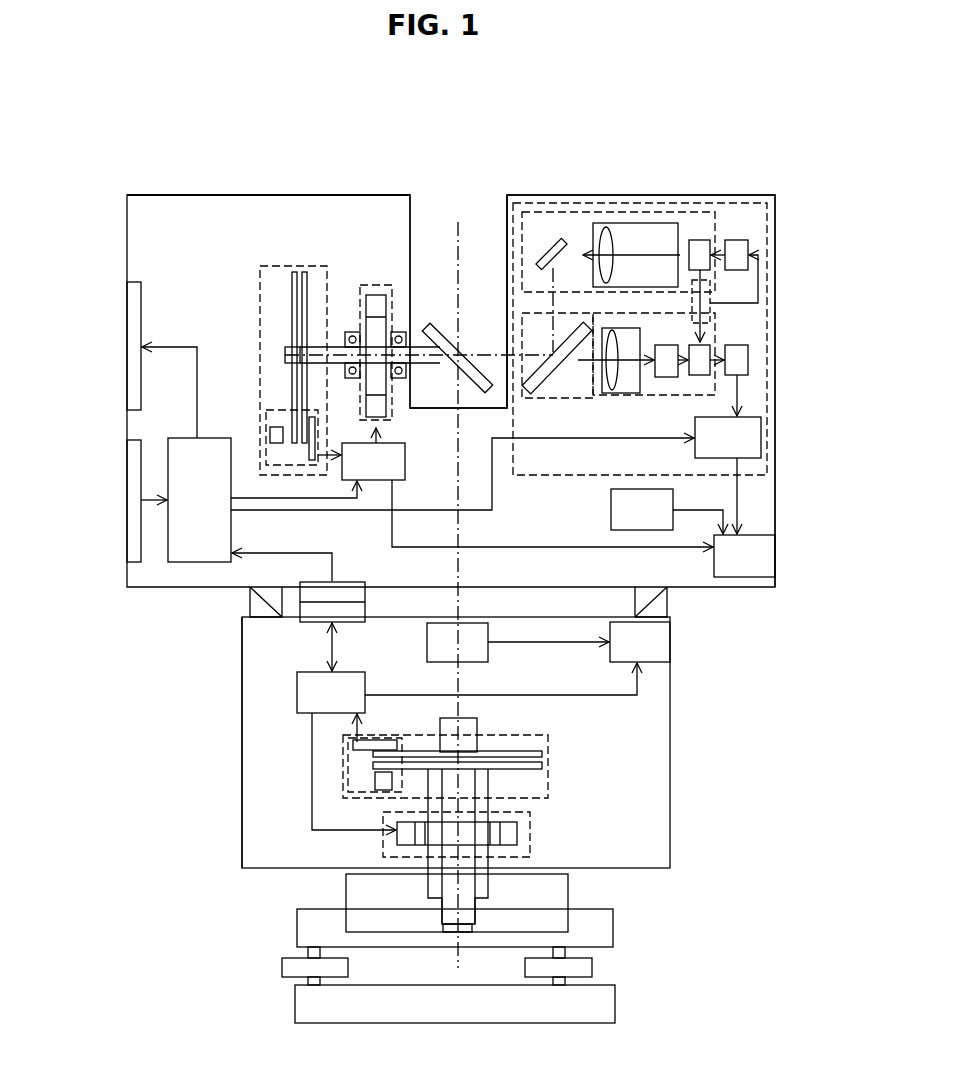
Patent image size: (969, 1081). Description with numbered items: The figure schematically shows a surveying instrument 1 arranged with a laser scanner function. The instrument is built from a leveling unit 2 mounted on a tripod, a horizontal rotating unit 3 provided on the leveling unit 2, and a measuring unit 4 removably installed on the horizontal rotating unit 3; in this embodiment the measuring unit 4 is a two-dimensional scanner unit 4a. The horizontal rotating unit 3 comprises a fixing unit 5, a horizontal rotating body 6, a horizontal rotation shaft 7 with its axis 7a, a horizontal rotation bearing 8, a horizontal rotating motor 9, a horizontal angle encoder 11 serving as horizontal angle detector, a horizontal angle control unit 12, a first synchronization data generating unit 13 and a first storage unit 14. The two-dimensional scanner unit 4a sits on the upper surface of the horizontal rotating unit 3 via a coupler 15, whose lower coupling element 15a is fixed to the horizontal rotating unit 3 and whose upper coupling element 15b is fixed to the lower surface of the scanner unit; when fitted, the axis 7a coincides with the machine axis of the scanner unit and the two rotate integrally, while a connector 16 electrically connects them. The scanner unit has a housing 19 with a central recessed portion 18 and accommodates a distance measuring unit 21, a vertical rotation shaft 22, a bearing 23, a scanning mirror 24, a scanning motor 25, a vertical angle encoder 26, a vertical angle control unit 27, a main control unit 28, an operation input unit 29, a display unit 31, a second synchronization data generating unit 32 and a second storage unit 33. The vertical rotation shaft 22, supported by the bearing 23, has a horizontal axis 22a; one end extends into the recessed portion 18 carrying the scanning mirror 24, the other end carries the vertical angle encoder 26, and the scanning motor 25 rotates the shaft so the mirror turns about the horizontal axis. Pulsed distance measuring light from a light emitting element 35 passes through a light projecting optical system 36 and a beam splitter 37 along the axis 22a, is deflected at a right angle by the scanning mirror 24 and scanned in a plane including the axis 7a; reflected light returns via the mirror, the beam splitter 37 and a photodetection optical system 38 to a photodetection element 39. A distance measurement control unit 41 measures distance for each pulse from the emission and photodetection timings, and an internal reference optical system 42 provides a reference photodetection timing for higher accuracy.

The surveying instrument 1 is at (323, 142).
The leveling unit 2 is at (613, 928).
The horizontal rotating unit 3 is at (672, 748).
The measuring unit 4 is at (333, 194).
The two-dimensional scanner unit 4a is at (317, 301).
The fixing unit 5 is at (568, 890).
The horizontal rotating body 6 is at (240, 812).
The horizontal rotation shaft 7 is at (477, 745).
The axis 7a is at (495, 778).
The horizontal rotation bearing 8 is at (487, 887).
The horizontal rotating motor 9 is at (530, 832).
The horizontal angle encoder 11 is at (548, 762).
The horizontal angle control unit 12 is at (297, 695).
The first synchronization data generating unit 13 is at (427, 645).
The first storage unit 14 is at (655, 662).
The coupler 15 is at (249, 600).
The lower coupling element 15a is at (667, 603).
The upper coupling element 15b is at (635, 600).
The connector 16 is at (366, 605).
The recessed portion 18 is at (474, 208).
The housing 19 is at (227, 195).
The distance measuring unit 21 is at (557, 195).
The vertical rotation shaft 22 is at (420, 364).
The horizontal axis 22a is at (285, 352).
The bearing 23 is at (399, 330).
The scanning mirror 24 is at (442, 324).
The scanning motor 25 is at (376, 285).
The vertical angle encoder 26 is at (285, 266).
The vertical angle control unit 27 is at (405, 463).
The main control unit 28 is at (205, 436).
The operation input unit 29 is at (127, 510).
The display unit 31 is at (127, 337).
The second synchronization data generating unit 32 is at (611, 512).
The second storage unit 33 is at (757, 533).
The light emitting element 35 is at (738, 240).
The light projecting optical system 36 is at (633, 210).
The beam splitter 37 is at (532, 398).
The photodetection optical system 38 is at (623, 398).
The photodetection element 39 is at (748, 360).
The distance measurement control unit 41 is at (760, 435).
The internal reference optical system 42 is at (760, 303).